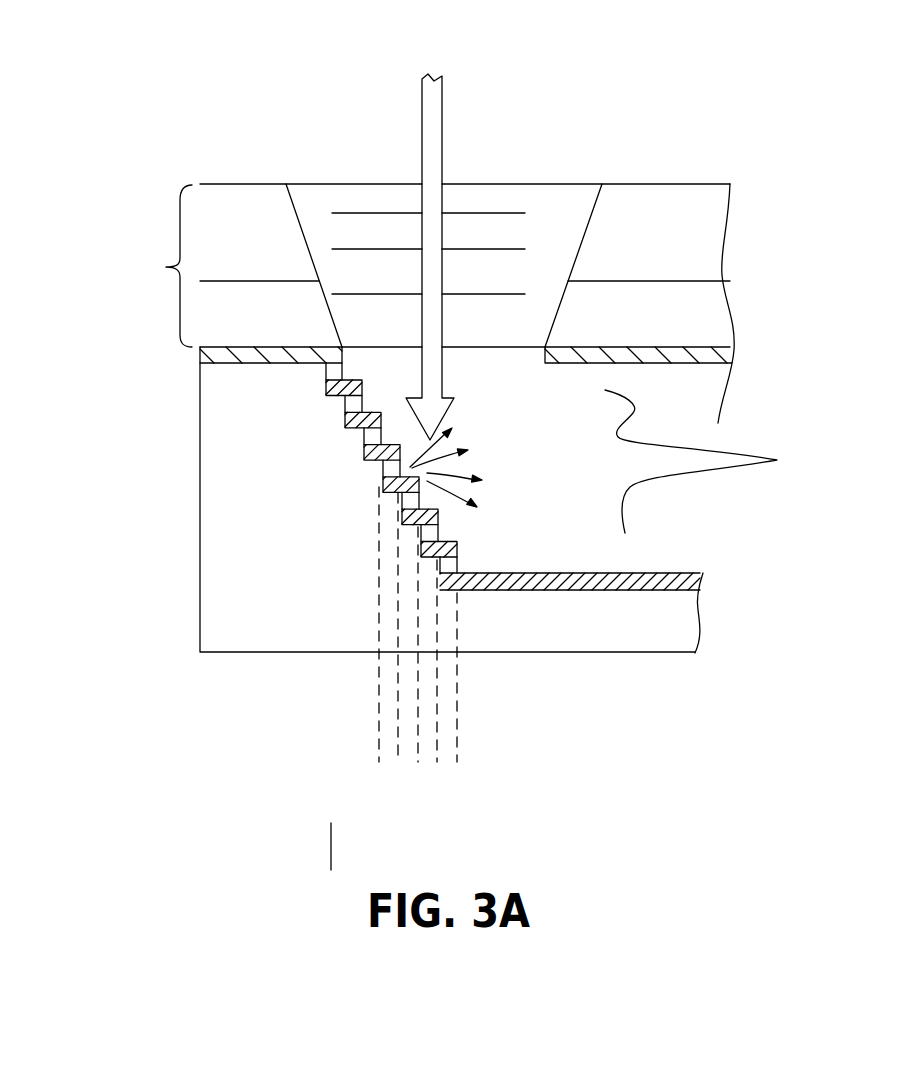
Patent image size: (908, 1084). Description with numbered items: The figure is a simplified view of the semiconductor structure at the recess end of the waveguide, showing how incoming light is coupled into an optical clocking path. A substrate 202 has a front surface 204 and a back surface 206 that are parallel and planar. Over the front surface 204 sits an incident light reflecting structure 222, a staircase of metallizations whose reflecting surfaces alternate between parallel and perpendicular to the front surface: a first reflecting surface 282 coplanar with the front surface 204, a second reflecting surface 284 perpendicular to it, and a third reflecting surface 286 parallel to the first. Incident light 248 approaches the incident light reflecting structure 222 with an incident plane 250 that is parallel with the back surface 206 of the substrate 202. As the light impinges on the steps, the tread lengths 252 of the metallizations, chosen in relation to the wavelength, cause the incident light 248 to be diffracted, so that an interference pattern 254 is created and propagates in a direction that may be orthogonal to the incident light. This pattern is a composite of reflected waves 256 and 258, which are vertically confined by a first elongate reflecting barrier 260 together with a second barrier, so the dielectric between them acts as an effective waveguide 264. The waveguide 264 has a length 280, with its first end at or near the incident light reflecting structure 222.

The substrate 202 is at (428, 265).
The front surface 204 is at (710, 363).
The back surface 206 is at (714, 184).
The incident light reflecting structure 222 is at (356, 462).
The incident light 248 is at (433, 147).
The incident plane 250 is at (550, 245).
The tread lengths 252 is at (485, 607).
The interference pattern 254 is at (692, 494).
The reflected wave 256 is at (455, 452).
The reflected wave 258 is at (470, 495).
The first elongate reflecting barrier 260 is at (242, 347).
The waveguide 264 is at (642, 600).
The length 280 is at (331, 852).
The first reflecting surface 282 is at (354, 384).
The second reflecting surface 284 is at (374, 395).
The third reflecting surface 286 is at (374, 418).